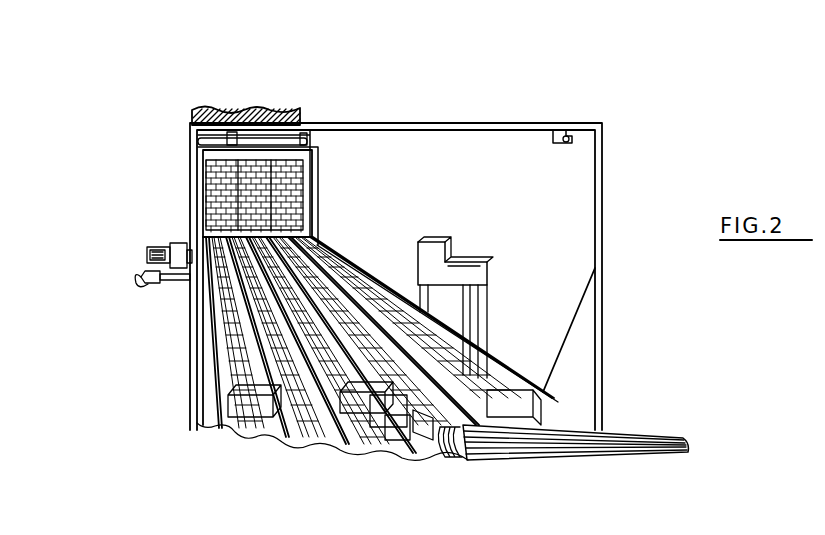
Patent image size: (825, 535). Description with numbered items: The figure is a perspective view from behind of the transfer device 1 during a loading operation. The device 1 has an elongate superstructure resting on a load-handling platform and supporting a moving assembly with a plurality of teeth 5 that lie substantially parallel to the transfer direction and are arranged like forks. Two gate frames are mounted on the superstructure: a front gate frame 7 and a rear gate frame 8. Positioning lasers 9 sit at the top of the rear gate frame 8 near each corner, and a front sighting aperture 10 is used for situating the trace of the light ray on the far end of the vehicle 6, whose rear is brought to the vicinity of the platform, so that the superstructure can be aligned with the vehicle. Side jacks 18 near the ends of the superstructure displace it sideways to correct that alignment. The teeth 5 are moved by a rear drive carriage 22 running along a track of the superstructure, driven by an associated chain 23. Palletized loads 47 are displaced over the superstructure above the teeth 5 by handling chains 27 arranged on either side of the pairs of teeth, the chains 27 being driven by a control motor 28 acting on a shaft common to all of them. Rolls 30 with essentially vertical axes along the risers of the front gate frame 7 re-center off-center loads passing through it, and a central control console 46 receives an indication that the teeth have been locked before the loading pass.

The transfer device 1 is at (368, 250).
The teeth 5 is at (373, 287).
The vehicle 6 is at (296, 115).
The front gate frame 7 is at (310, 140).
The rear gate frame 8 is at (600, 203).
The positioning lasers 9 is at (231, 132).
The front sighting aperture 10 is at (556, 132).
The side jacks 18 is at (163, 283).
The rear drive carriage 22 is at (258, 393).
The chain 23 is at (393, 430).
The chains 27 is at (320, 443).
The control motor 28 is at (158, 246).
The rolls 30 is at (318, 180).
The central control console 46 is at (432, 242).
The loads 47 is at (630, 427).